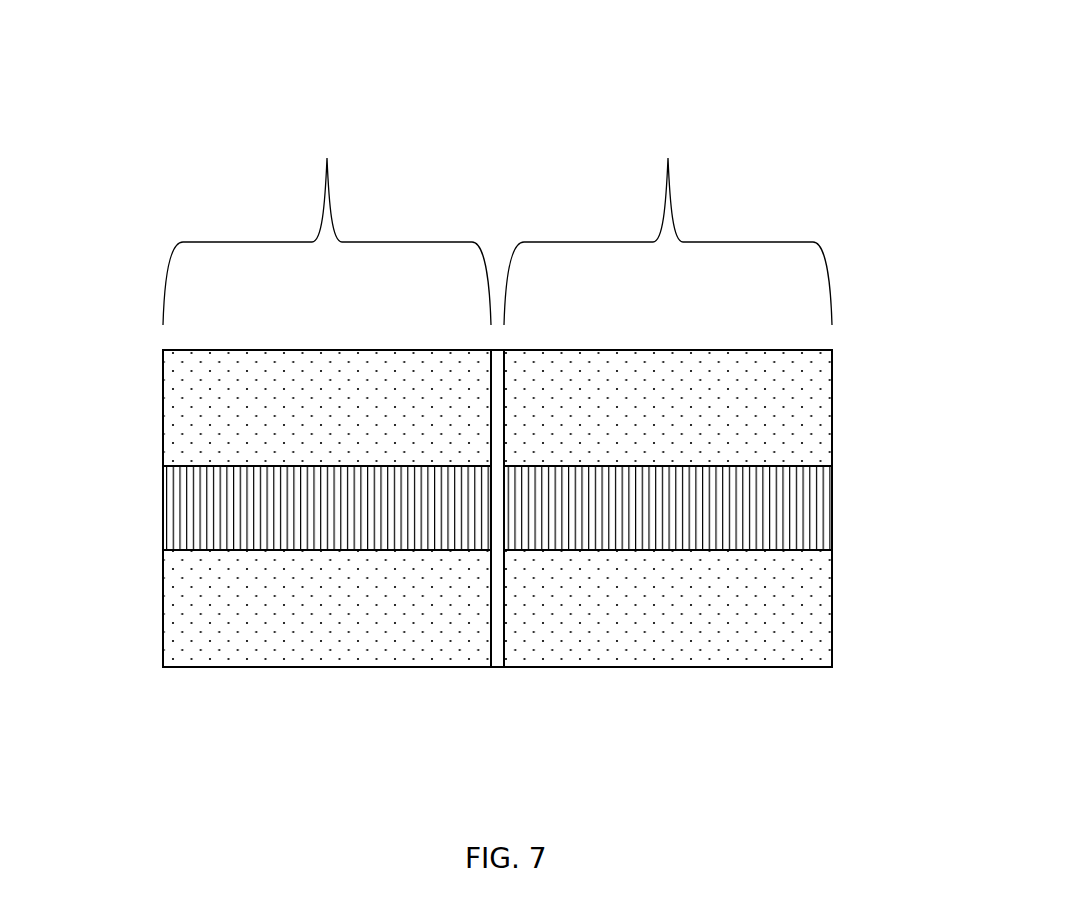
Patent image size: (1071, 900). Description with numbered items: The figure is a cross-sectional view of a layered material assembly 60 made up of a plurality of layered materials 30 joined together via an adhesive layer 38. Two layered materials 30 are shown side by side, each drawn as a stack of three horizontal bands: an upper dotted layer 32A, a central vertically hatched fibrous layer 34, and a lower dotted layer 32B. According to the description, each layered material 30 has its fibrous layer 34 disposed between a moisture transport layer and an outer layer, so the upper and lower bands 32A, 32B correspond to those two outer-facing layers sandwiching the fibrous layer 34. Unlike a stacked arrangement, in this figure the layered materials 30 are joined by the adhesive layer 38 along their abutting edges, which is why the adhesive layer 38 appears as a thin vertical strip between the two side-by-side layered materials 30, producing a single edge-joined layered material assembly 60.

The layered material 30 is at (497, 216).
The first layer 32A is at (188, 438).
The second layer 32B is at (393, 612).
The fibrous layer 34 is at (200, 547).
The adhesive layer 38 is at (497, 642).
The layered material assembly 60 is at (485, 378).